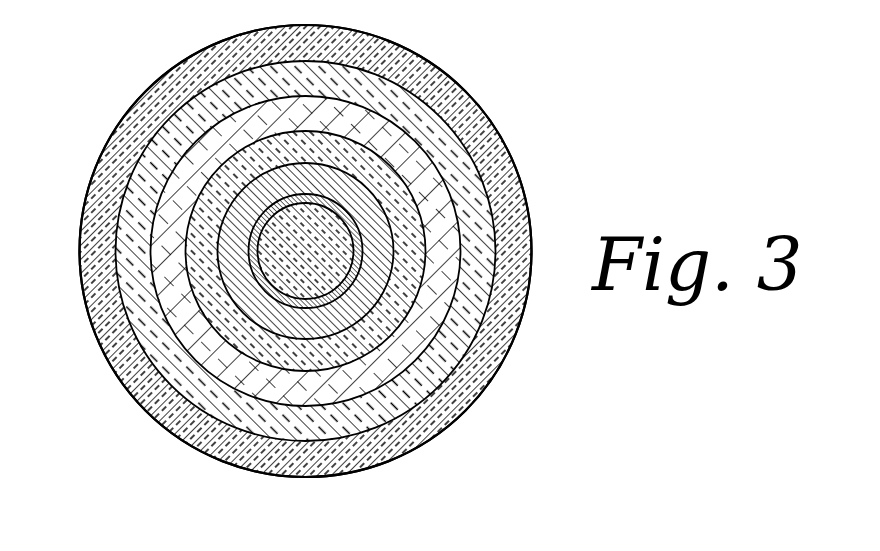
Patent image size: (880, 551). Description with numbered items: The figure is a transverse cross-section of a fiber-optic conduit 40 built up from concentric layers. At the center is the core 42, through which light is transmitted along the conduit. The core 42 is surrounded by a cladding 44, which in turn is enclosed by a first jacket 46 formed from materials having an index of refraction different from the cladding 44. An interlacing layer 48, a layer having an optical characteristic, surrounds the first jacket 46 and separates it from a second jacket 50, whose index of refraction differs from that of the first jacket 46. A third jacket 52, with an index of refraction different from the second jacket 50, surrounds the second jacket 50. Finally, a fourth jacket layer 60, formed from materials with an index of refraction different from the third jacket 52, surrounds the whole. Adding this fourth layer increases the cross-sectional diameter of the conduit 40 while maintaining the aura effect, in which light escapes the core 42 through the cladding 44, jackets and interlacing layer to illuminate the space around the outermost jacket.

The fiber-optic conduit 40 is at (118, 124).
The core 42 is at (335, 258).
The cladding 44 is at (352, 225).
The first jacket 46 is at (345, 182).
The interlacing layer 48 is at (335, 130).
The second jacket 50 is at (432, 315).
The third jacket 52 is at (453, 367).
The fourth jacket layer 60 is at (440, 417).